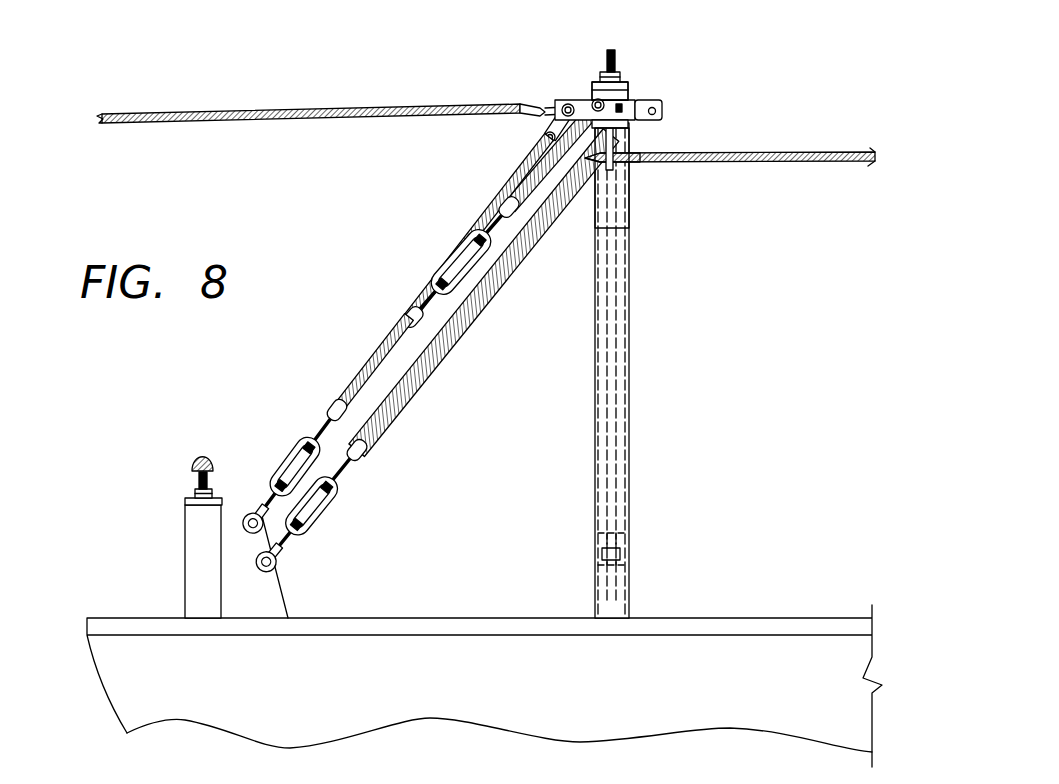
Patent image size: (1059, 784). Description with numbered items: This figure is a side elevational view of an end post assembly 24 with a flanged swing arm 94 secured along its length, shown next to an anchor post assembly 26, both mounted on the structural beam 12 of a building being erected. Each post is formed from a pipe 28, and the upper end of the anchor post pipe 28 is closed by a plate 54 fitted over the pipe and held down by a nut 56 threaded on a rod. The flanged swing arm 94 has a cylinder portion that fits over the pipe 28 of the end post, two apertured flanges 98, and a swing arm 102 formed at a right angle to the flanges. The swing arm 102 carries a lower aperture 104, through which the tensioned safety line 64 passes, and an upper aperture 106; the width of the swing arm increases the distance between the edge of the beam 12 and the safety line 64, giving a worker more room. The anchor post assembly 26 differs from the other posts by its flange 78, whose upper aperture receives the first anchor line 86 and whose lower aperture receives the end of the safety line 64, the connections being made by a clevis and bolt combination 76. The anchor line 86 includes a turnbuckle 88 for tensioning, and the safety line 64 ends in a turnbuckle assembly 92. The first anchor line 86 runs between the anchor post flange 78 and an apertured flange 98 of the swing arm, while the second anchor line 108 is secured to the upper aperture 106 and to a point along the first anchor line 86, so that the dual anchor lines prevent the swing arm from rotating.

The structural beam 12 is at (632, 684).
The end post assembly 24 is at (658, 206).
The anchor post assembly 26 is at (148, 475).
The pipe 28 is at (632, 455).
The plate 54 is at (185, 501).
The nut 56 is at (190, 490).
The tensioned safety line 64 is at (810, 152).
The clevis and bolt combination 76 is at (543, 108).
The anchor post flange 78 is at (272, 598).
The anchor line 86 is at (487, 213).
The turnbuckle 88 is at (287, 462).
The turnbuckle assembly 92 is at (322, 516).
The flanged swing arm 94 is at (655, 91).
The apertured flange 98 is at (565, 103).
The swing arm 102 is at (617, 146).
The lower aperture 104 is at (640, 163).
The upper aperture 106 is at (635, 99).
The second anchor line 108 is at (387, 353).